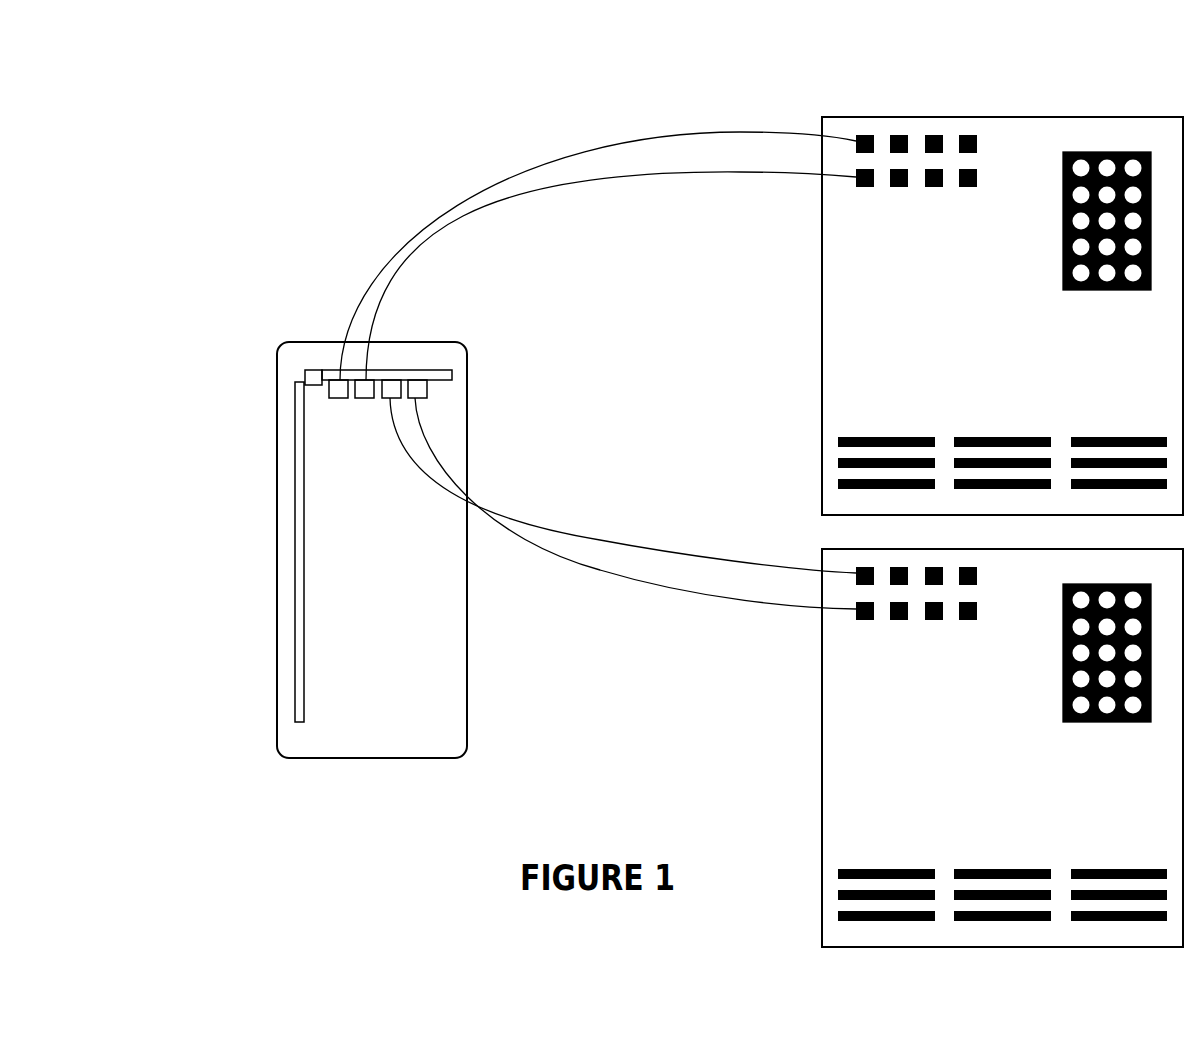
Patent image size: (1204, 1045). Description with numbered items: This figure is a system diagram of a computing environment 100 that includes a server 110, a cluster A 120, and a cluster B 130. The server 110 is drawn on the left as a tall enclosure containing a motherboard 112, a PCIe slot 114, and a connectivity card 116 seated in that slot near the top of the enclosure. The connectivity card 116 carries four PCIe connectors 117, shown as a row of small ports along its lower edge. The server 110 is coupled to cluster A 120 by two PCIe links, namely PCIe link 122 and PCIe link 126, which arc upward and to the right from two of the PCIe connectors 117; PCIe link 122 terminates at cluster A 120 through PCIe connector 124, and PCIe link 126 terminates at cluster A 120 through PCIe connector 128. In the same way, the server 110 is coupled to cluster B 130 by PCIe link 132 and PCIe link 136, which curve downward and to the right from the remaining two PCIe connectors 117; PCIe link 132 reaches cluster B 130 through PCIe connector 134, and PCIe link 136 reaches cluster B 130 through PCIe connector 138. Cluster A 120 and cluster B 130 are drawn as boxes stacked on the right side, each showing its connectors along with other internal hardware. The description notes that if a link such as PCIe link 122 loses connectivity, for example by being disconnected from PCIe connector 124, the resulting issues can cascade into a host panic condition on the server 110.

The computing environment 100 is at (263, 98).
The server 110 is at (372, 550).
The motherboard 112 is at (295, 614).
The PCIe slot 114 is at (309, 374).
The connectivity card 116 is at (402, 372).
The PCIe connectors 117 is at (433, 392).
The cluster A 120 is at (1002, 316).
The PCIe link 122 is at (538, 170).
The PCIe connector 124 is at (877, 133).
The PCIe link 126 is at (592, 205).
The PCIe connector 128 is at (878, 190).
The cluster B 130 is at (1002, 748).
The PCIe link 132 is at (606, 530).
The PCIe connector 134 is at (877, 565).
The PCIe link 136 is at (616, 588).
The PCIe connector 138 is at (878, 623).